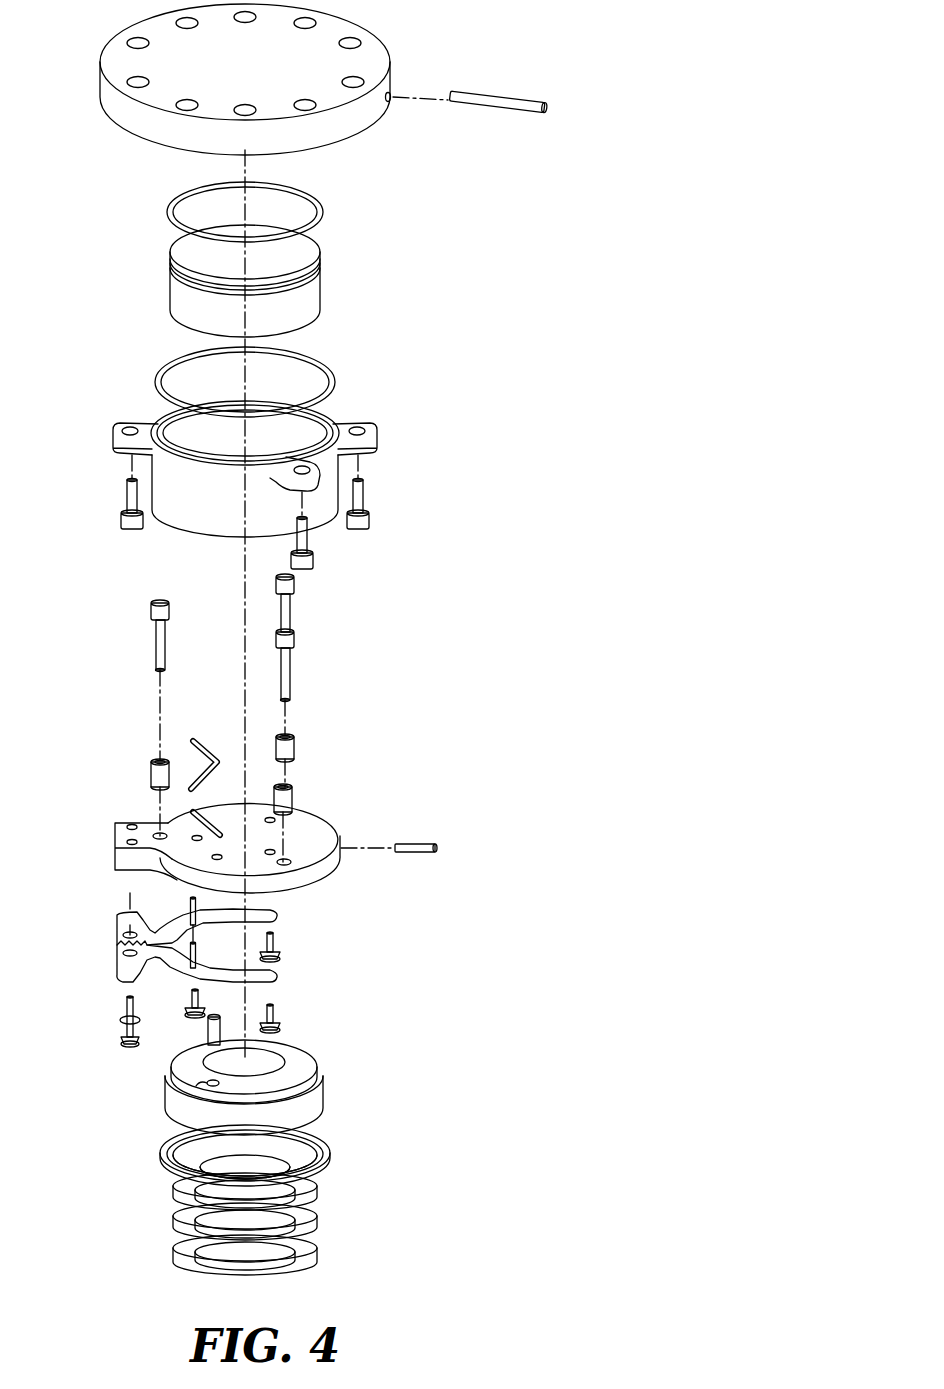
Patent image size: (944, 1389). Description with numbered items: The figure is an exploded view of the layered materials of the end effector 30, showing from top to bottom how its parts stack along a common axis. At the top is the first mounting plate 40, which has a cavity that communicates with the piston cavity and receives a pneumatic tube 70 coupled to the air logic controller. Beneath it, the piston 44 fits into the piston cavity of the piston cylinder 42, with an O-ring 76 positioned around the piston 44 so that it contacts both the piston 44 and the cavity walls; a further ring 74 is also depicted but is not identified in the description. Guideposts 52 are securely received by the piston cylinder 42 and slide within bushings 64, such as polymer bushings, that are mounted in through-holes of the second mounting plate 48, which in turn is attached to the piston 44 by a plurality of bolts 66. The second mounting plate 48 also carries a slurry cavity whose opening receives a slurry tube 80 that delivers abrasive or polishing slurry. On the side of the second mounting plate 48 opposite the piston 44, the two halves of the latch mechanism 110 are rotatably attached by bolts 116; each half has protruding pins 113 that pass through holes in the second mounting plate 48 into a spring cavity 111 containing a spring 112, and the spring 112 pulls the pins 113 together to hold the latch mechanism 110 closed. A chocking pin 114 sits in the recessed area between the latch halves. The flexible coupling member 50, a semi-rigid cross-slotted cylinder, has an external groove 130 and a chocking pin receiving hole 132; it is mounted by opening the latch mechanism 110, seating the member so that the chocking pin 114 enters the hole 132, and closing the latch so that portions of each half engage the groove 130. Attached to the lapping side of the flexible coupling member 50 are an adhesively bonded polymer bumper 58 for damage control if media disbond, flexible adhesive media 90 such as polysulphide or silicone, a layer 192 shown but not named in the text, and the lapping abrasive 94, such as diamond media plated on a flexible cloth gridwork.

The end effector 30 is at (566, 357).
The first mounting plate 40 is at (340, 132).
The pneumatic tube 70 is at (494, 100).
The O-ring 74 is at (325, 222).
The piston 44 is at (316, 297).
The O-ring 76 is at (333, 368).
The piston cylinder 42 is at (340, 421).
The guideposts 52 is at (291, 676).
The bushings 64 is at (155, 778).
The spring 112 is at (200, 742).
The spring cavity 111 is at (192, 813).
The second mounting plate 48 is at (330, 822).
The slurry tube 80 is at (425, 855).
The protruding pins 113 is at (188, 930).
The latch mechanism 110 is at (278, 916).
The bolts 66 is at (278, 942).
The bolts 116 is at (126, 1036).
The chocking pin 114 is at (208, 1040).
The flexible coupling member 50 is at (325, 1098).
The external groove 130 is at (207, 1083).
The chocking pin receiving hole 132 is at (196, 1087).
The polymer bumper 58 is at (332, 1159).
The flexible adhesive media 90 is at (318, 1197).
The ring 192 is at (318, 1230).
The lapping abrasive 94 is at (318, 1262).